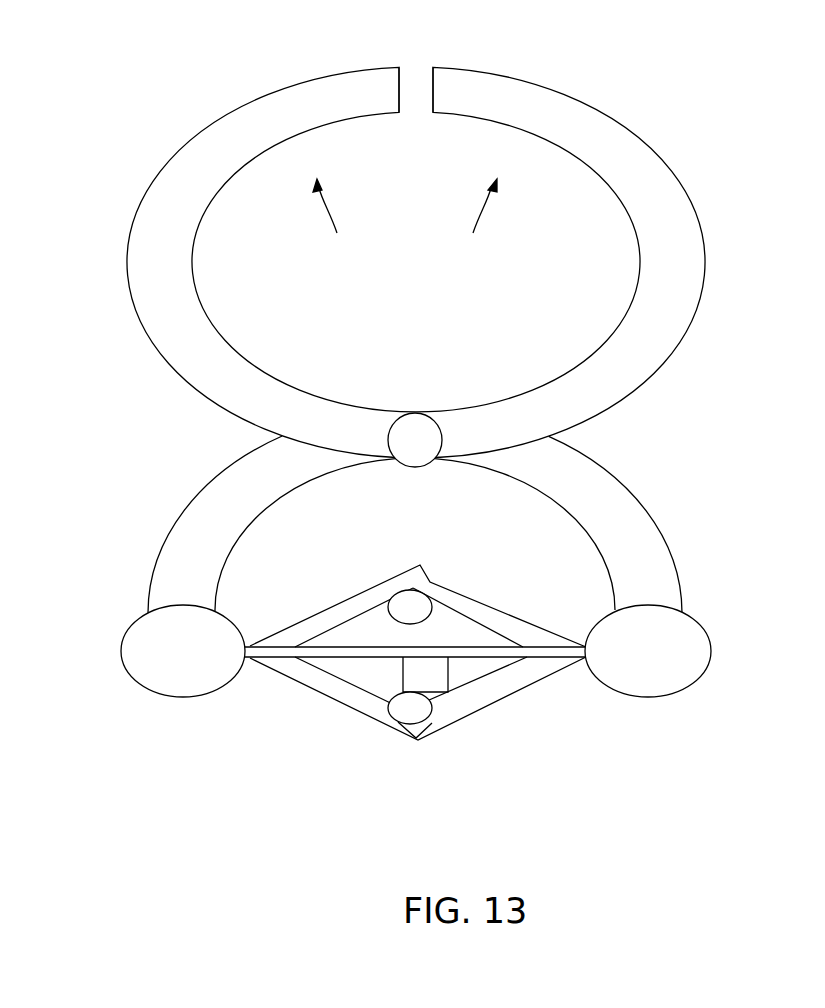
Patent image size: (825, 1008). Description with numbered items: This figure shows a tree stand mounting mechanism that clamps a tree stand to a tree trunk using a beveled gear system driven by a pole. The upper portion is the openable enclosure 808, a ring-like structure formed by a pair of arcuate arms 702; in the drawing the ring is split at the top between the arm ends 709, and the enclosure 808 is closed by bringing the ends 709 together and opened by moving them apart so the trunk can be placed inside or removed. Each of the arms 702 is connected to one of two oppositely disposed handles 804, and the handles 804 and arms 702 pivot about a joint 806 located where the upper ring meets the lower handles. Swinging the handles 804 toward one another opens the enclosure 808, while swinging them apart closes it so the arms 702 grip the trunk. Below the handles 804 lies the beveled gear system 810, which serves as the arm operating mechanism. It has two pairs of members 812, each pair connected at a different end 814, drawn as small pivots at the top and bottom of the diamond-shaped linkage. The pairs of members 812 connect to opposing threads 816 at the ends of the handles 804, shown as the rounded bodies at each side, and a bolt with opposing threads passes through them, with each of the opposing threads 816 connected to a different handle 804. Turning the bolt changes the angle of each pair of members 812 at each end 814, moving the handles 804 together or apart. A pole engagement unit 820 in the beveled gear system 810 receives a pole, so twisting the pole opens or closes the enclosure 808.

The annular ring 702 is at (182, 147).
The ring ends at gap 709 is at (380, 77).
The enclosure 808 is at (407, 221).
The joint 806 is at (415, 425).
The handles 804 is at (180, 545).
The beveled gear system 810 is at (416, 711).
The members 812 is at (290, 635).
The end 814 is at (413, 595).
The opposing threads 816 is at (575, 637).
The pole engagement unit 820 is at (440, 687).